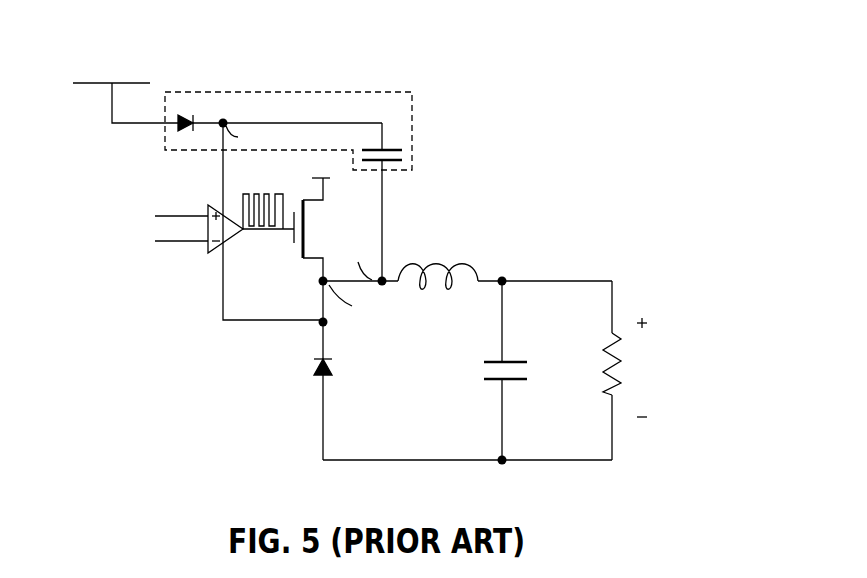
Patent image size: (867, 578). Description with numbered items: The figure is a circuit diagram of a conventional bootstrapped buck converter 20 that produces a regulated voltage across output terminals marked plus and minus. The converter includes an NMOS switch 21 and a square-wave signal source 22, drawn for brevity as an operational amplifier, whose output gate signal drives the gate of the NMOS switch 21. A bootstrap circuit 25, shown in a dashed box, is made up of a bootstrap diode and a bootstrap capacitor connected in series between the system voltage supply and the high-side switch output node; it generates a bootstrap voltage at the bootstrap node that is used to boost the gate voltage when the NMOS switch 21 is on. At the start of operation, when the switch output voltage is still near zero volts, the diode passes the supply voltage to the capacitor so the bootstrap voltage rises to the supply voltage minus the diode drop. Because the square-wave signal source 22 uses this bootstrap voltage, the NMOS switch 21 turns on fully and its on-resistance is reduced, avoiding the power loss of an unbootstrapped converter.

The bootstrapped buck converter 20 is at (367, 258).
The NMOS switch 21 is at (317, 223).
The square-wave signal source 22 is at (210, 210).
The bootstrap circuit 25 is at (264, 86).